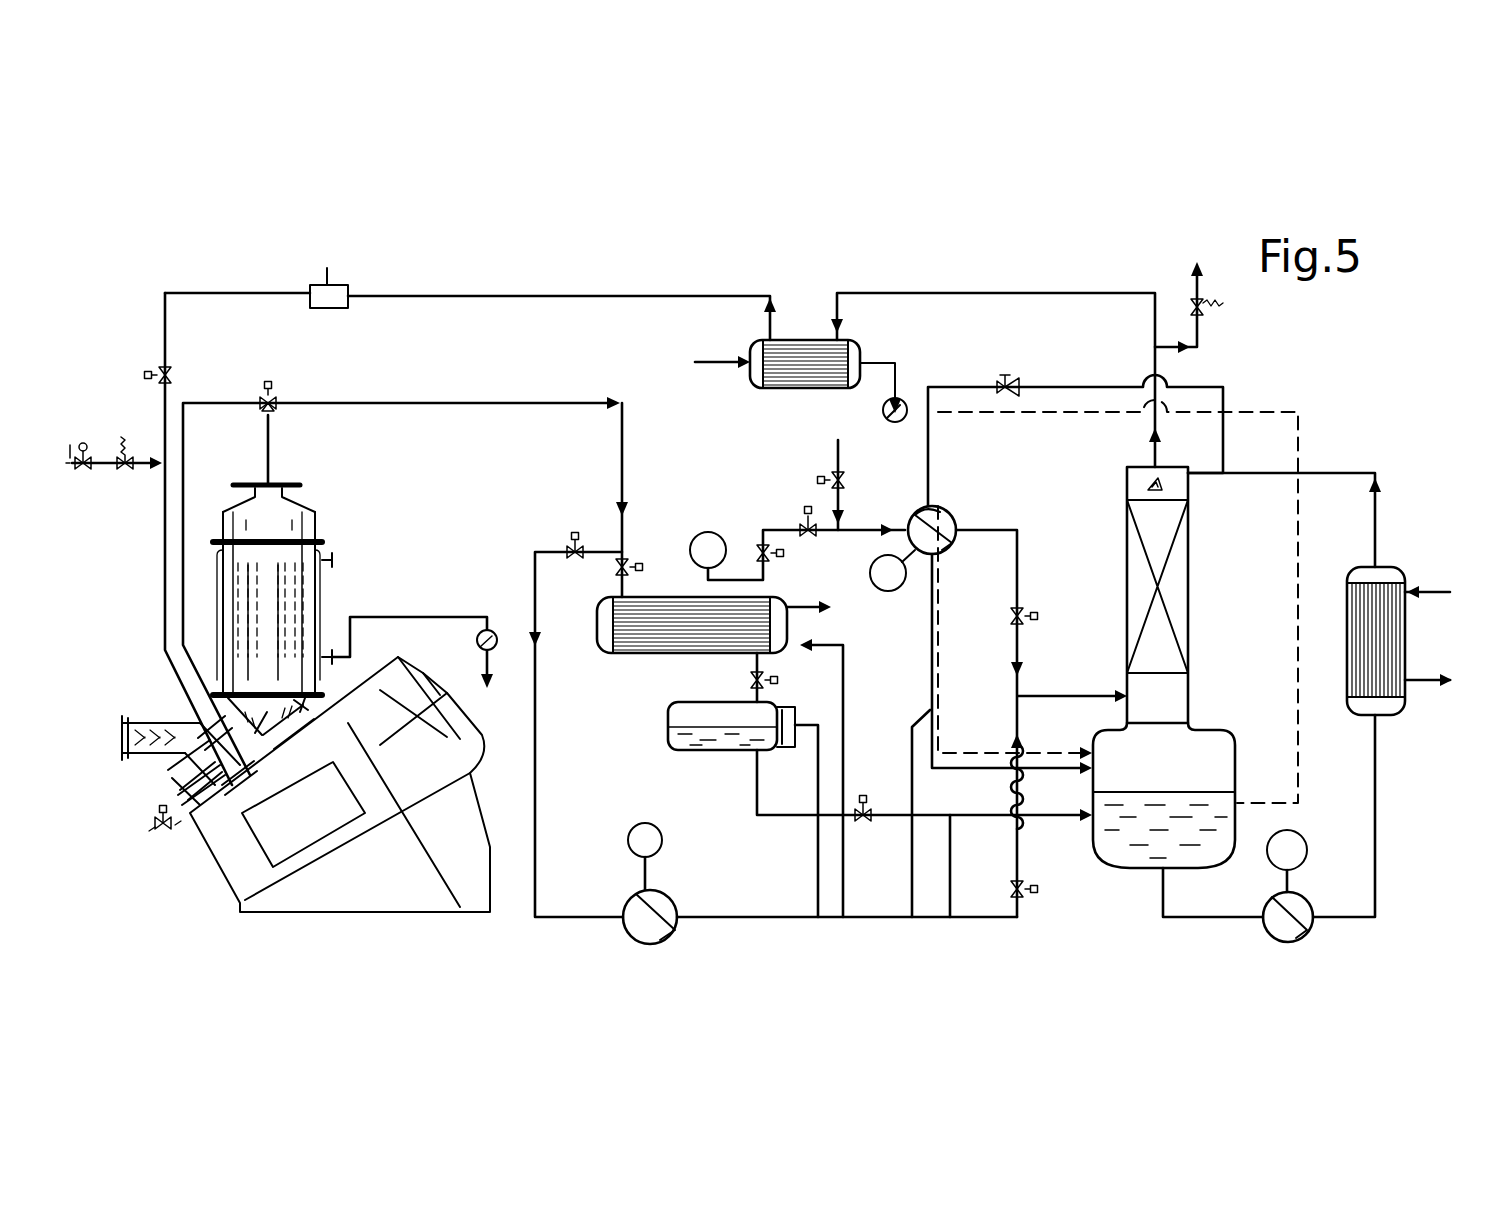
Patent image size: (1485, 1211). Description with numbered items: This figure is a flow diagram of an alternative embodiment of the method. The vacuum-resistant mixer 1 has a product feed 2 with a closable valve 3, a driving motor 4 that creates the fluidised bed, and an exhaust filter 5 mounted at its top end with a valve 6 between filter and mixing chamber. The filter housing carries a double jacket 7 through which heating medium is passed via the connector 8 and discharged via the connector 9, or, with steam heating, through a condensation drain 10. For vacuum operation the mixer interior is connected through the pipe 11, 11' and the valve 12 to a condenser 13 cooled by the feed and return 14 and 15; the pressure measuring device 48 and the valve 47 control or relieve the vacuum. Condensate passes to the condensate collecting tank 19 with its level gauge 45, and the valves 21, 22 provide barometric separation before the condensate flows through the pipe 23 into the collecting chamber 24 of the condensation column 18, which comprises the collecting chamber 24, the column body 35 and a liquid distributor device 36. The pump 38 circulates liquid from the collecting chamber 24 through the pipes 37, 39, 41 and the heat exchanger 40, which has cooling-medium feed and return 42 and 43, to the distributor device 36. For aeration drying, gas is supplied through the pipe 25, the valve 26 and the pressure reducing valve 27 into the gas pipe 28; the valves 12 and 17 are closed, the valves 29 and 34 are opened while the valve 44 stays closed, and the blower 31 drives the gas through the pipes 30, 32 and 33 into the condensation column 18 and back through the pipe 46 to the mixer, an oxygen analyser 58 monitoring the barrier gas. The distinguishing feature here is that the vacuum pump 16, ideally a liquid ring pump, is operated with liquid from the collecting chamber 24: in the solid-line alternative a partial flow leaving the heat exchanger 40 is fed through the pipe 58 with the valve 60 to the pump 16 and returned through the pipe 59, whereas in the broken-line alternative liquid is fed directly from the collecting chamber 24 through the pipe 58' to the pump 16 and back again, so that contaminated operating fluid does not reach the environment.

The vacuum-resistant mixer 1 is at (335, 892).
The product feed 2 is at (140, 728).
The valve 3 is at (177, 787).
The driving motor 4 is at (447, 737).
The exhaust filter 5 is at (295, 485).
The valve 6 is at (243, 783).
The double jacket 7 is at (317, 587).
The connector 8 is at (323, 555).
The connector 9 is at (322, 655).
The condensation drain 10 is at (508, 650).
The pipe 11 is at (397, 505).
The pipe 11' is at (211, 515).
The valve 12 is at (638, 550).
The condenser 13 is at (637, 640).
The cooling medium feed 14 is at (843, 917).
The cooling medium return 15 is at (810, 547).
The vacuum pump 16 is at (923, 507).
The valve 17 is at (1022, 612).
The condensation column 18 is at (1210, 758).
The condensate collecting tank 19 is at (703, 737).
The valve 21 is at (755, 662).
The valve 22 is at (865, 823).
The pipe 23 is at (950, 917).
The collecting chamber 24 is at (1130, 848).
The pipe 25 is at (70, 450).
The valve 26 is at (90, 478).
The pressure reducing valve 27 is at (130, 478).
The gas pipe 28 is at (165, 540).
The valve 29 is at (573, 540).
The pipe 30 is at (542, 797).
The blower 31 is at (630, 920).
The pipe 32 is at (805, 815).
The pipe 33 is at (1017, 852).
The valve 34 is at (1020, 895).
The body of the column 35 is at (1180, 548).
The liquid distributor device 36 is at (1162, 482).
The pipe 37 is at (1175, 922).
The pump 38 is at (1295, 927).
The pipe 39 is at (1380, 860).
The heat exchanger 40 is at (1387, 642).
The pipe 41 is at (1335, 473).
The cooling medium feed 42 is at (1432, 592).
The cooling medium return 43 is at (1428, 685).
The valve 44 is at (163, 368).
The level gauge 45 is at (807, 507).
The pipe 46 is at (509, 640).
The valve 47 is at (842, 475).
The pressure measuring device 48 is at (710, 532).
The pipe 58 is at (787, 308).
The pipe 58' is at (1207, 323).
The pipe 59 is at (912, 917).
The valve 60 is at (1018, 378).